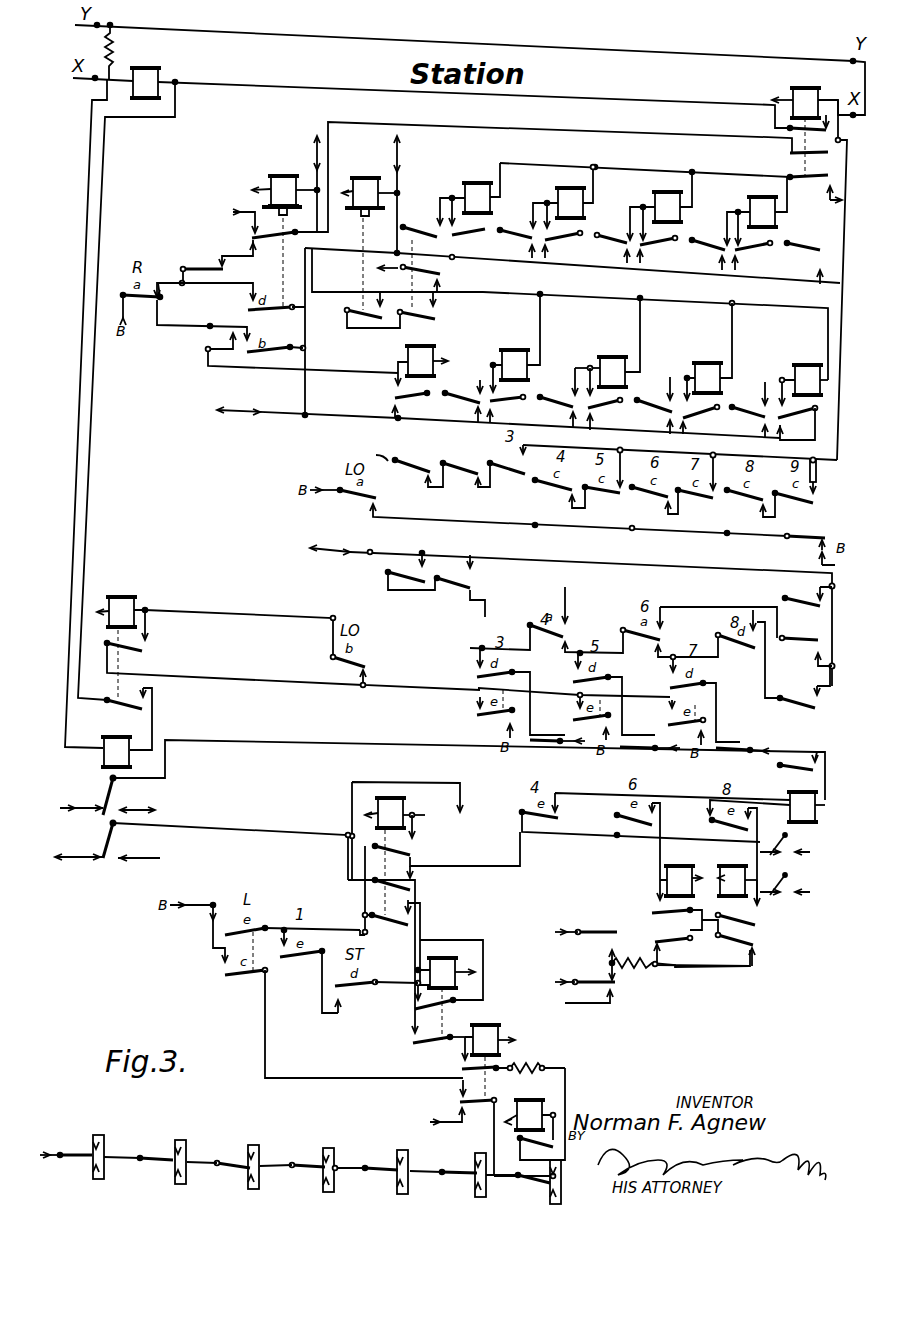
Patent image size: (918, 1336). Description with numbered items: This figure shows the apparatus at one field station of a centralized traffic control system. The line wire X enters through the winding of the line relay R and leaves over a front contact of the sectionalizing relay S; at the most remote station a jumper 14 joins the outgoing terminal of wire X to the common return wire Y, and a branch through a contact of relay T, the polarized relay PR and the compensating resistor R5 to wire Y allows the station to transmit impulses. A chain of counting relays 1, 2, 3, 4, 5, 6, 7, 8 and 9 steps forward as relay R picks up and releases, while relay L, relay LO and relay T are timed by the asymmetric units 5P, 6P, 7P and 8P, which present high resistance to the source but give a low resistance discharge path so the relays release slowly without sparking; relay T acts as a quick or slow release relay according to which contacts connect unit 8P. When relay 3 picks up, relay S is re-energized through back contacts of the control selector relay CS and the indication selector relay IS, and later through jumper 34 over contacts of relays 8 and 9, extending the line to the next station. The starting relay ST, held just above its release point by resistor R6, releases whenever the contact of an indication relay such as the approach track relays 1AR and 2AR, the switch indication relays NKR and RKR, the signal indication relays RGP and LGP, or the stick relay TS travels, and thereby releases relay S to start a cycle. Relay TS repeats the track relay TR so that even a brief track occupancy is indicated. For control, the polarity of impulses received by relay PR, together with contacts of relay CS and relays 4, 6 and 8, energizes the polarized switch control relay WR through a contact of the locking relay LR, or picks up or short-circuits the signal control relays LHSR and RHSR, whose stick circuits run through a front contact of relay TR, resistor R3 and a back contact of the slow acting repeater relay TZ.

The compensating resistor R5 is at (121, 53).
The line relay R is at (145, 74).
The sectionalizing relay S is at (805, 263).
The jumper 14 is at (865, 79).
The relay L is at (268, 229).
The relay LO is at (365, 241).
The asymmetric unit 5P is at (315, 166).
The asymmetric unit 6P is at (403, 220).
The asymmetric unit 7P is at (260, 412).
The asymmetric unit 8P is at (360, 547).
The relay 1 is at (424, 372).
The relay 2 is at (484, 292).
The relay 3 is at (513, 358).
The relay 4 is at (562, 296).
The relay 5 is at (607, 364).
The relay 6 is at (643, 303).
The relay 7 is at (706, 368).
The relay 8 is at (756, 307).
The relay 9 is at (802, 393).
The starting relay ST is at (338, 705).
The control selector relay CS is at (435, 705).
The indication selector relay IS is at (468, 734).
The jumper 34 is at (816, 483).
The switch indication relay NKR is at (550, 849).
The relay T is at (225, 662).
The polarized relay PR is at (431, 798).
The stick relay TS is at (663, 889).
The approach track relay 1AR is at (621, 900).
The switch indication relay RKR is at (508, 926).
The signal indication relay RGP is at (309, 945).
The signal indication relay LGP is at (411, 948).
The approach track relay 2AR is at (570, 955).
The locking relay LR is at (801, 765).
The switch control relay WR is at (766, 797).
The signal control relay LHSR is at (701, 905).
The signal control relay RHSR is at (756, 899).
The slow acting repeater relay TZ is at (578, 918).
The resistor R3 is at (679, 952).
The track relay TR is at (577, 977).
The resistor R6 is at (530, 1060).